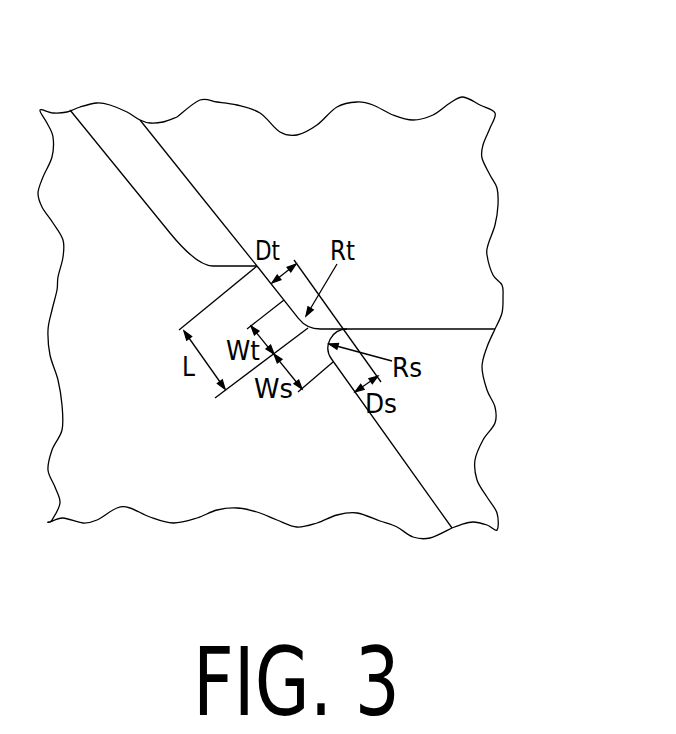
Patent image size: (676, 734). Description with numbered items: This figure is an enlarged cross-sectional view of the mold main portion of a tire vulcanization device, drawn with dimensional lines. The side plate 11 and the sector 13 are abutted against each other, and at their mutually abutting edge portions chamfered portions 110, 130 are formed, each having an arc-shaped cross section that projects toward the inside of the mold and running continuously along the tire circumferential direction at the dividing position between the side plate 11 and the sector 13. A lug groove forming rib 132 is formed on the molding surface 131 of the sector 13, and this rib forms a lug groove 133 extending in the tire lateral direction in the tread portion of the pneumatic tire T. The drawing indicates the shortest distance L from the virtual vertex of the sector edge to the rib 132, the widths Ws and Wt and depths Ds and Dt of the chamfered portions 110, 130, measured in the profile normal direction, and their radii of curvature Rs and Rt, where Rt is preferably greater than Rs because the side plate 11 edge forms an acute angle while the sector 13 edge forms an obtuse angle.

The sector 13 is at (460, 243).
The side plate 11 is at (452, 432).
The pneumatic tire T is at (128, 488).
The lug groove 133 is at (96, 146).
The lug groove forming rib 132 is at (173, 187).
The molding surface 131 is at (214, 213).
The chamfered portion 130 is at (307, 332).
The chamfered portion 110 is at (321, 345).